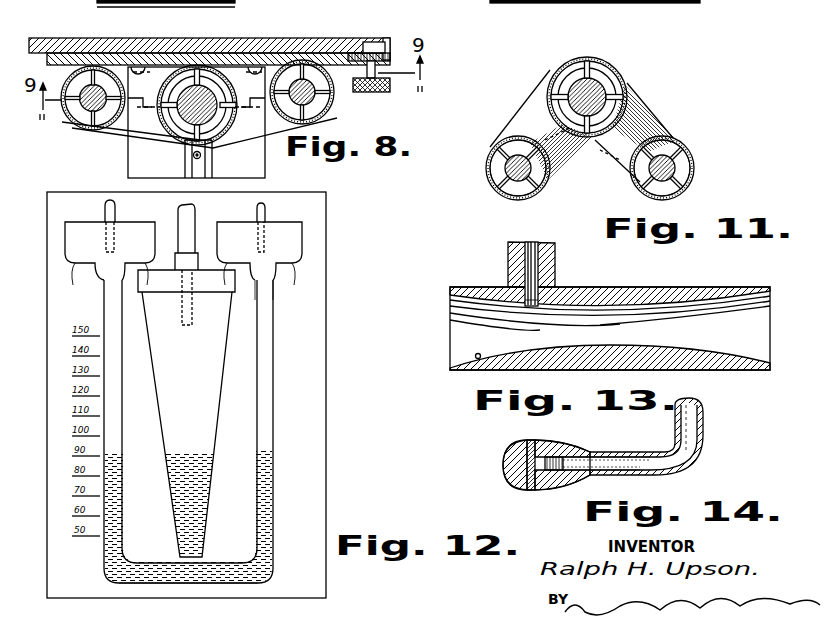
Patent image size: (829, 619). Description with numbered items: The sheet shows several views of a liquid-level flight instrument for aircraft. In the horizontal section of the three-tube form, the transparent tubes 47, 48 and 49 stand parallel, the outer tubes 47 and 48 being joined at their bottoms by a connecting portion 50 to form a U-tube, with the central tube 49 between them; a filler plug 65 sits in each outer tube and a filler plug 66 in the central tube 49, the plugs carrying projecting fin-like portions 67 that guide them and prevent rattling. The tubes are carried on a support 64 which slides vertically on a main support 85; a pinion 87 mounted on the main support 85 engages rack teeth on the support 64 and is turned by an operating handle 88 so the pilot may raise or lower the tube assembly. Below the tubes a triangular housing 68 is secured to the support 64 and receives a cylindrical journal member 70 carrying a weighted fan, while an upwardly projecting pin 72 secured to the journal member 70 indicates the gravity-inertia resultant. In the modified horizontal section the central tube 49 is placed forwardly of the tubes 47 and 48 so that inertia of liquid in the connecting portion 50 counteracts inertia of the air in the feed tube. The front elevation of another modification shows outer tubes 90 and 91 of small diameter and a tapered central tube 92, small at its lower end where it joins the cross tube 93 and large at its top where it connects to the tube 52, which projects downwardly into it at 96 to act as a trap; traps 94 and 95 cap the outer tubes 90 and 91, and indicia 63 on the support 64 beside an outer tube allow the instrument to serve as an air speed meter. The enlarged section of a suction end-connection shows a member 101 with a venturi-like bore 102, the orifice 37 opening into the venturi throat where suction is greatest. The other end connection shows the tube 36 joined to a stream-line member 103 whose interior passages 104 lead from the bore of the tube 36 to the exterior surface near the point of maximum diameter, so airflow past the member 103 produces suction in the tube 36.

In FIG. 8, the main support 85 is at (146, 38).
In FIG. 8, the support 64 is at (272, 38).
In FIG. 12, the support 64 is at (326, 455).
In FIG. 8, the pinion 87 is at (395, 50).
In FIG. 8, the operating handle 88 is at (369, 92).
In FIG. 8, the filler plug 65 is at (70, 127).
In FIG. 11, the filler plug 65 is at (490, 175).
In FIG. 8, the filler plug 66 is at (197, 125).
In FIG. 11, the filler plug 66 is at (600, 84).
In FIG. 8, the fin-like portion 67 is at (108, 128).
In FIG. 11, the fin-like portion 67 is at (590, 62).
In FIG. 8, the housing 68 is at (265, 167).
In FIG. 8, the journal member 70 is at (200, 176).
In FIG. 8, the pin 72 is at (194, 158).
In FIG. 11, the central tube 49 is at (622, 82).
In FIG. 11, the tube 47 is at (549, 181).
In FIG. 11, the tube 48 is at (694, 170).
In FIG. 11, the connecting portion 50 is at (524, 116).
In FIG. 13, the member 101 is at (486, 291).
In FIG. 13, the bore 102 is at (478, 358).
In FIG. 13, the orifice 37 is at (535, 306).
In FIG. 14, the member 103 is at (566, 488).
In FIG. 14, the passages 104 is at (556, 449).
In FIG. 14, the tube 36 is at (705, 426).
In FIG. 12, the tube 36 is at (96, 212).
In FIG. 12, the outer tube 90 is at (118, 454).
In FIG. 12, the outer tube 91 is at (273, 375).
In FIG. 12, the central tube 92 is at (213, 425).
In FIG. 12, the cross tube 93 is at (207, 584).
In FIG. 12, the trap 94 is at (78, 276).
In FIG. 12, the trap 95 is at (288, 276).
In FIG. 12, the downward projection of tube 96 is at (178, 326).
In FIG. 12, the tube 52 is at (188, 214).
In FIG. 12, the indicia 63 is at (112, 478).